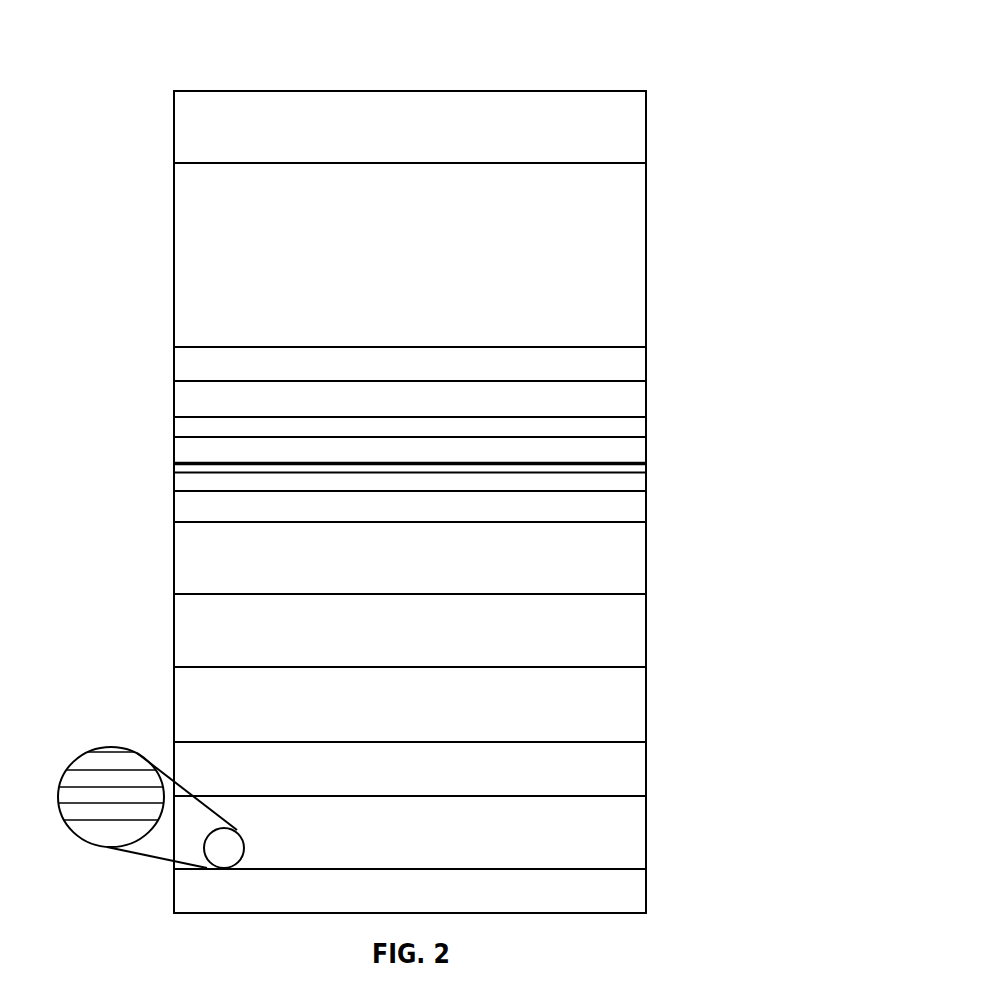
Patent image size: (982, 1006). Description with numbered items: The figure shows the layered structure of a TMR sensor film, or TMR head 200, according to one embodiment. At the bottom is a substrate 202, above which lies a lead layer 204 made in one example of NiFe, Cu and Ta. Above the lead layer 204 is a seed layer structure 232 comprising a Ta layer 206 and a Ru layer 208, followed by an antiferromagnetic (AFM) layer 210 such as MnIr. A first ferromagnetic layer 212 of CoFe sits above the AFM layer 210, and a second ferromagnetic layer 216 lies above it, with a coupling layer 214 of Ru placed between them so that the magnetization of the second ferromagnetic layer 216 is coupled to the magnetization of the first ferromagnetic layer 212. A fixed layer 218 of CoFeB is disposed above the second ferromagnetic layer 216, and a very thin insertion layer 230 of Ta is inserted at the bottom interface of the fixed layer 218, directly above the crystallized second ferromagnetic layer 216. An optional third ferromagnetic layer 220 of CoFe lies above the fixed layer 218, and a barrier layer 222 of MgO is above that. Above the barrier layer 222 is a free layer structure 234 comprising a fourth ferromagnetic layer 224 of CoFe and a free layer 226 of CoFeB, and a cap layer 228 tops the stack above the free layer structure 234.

The TMR sensor film 200 is at (583, 54).
The substrate 202 is at (271, 902).
The lead layer 204 is at (391, 842).
The Ta layer 206 is at (271, 778).
The Ru layer 208 is at (271, 716).
The antiferromagnetic (AFM) layer 210 is at (271, 640).
The first ferromagnetic layer 212 is at (271, 566).
The coupling layer 214 is at (271, 516).
The second ferromagnetic layer 216 is at (637, 481).
The fixed layer 218 is at (637, 451).
The third ferromagnetic layer 220 is at (637, 427).
The barrier layer 222 is at (271, 408).
The fourth ferromagnetic layer 224 is at (271, 374).
The free layer 226 is at (271, 266).
The cap layer 228 is at (271, 136).
The insertion layer 230 is at (186, 463).
The seed layer structure 232 is at (660, 667).
The free layer structure 234 is at (659, 163).